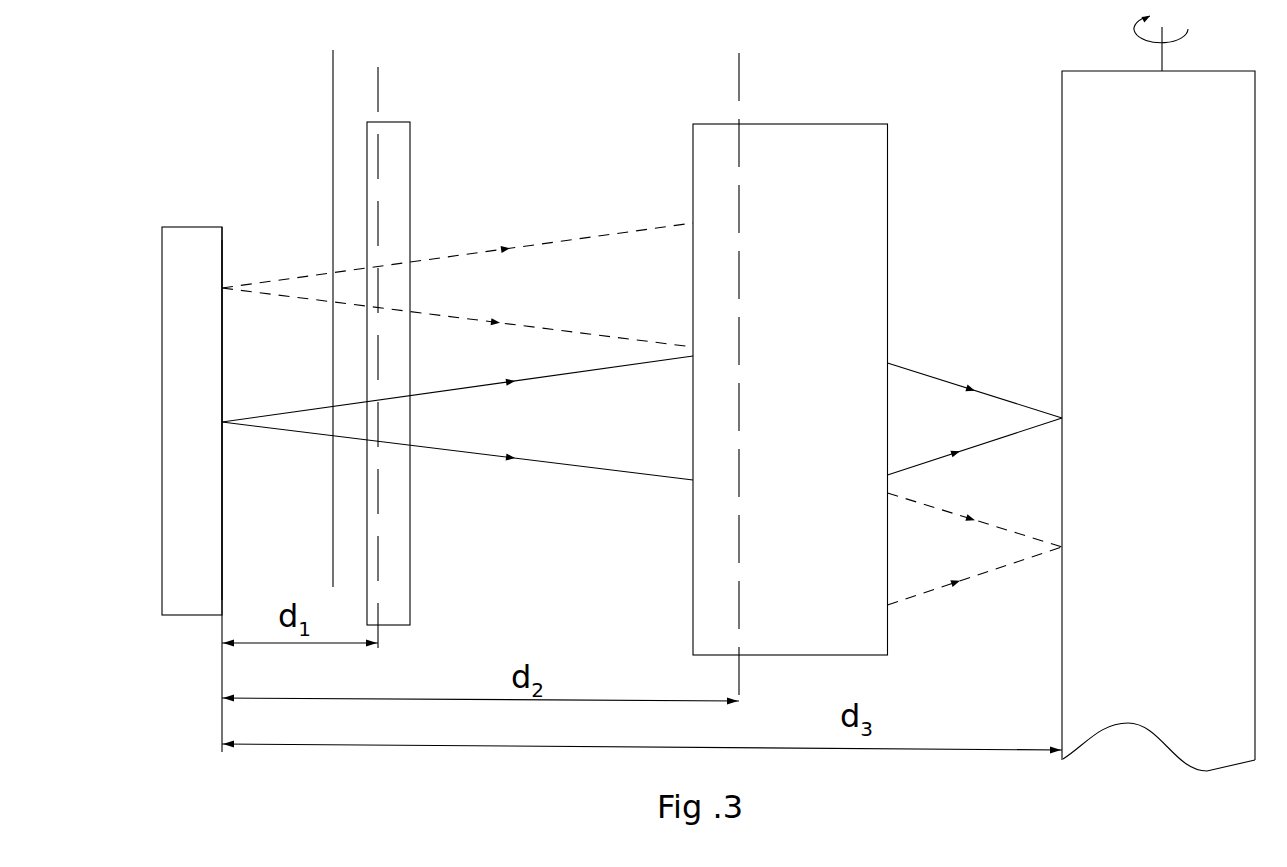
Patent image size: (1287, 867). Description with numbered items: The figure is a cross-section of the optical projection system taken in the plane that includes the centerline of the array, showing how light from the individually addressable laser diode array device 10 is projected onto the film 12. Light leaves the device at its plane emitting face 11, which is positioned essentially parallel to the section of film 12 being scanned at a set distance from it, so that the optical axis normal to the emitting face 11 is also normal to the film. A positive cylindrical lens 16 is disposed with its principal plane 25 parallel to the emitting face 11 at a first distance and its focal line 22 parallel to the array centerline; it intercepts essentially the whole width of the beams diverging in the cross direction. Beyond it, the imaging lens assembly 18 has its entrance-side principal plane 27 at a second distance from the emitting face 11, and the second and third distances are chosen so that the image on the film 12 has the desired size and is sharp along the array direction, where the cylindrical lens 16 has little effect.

The individually addressable laser diode array device 10 is at (195, 242).
The emitting face 11 is at (223, 248).
The focal line 22 is at (335, 82).
The principal plane 25 is at (378, 68).
The positive cylindrical lens 16 is at (400, 158).
The imaging lens assembly 18 is at (820, 140).
The principal plane on the entrance side 27 is at (738, 87).
The film 12 is at (1078, 130).